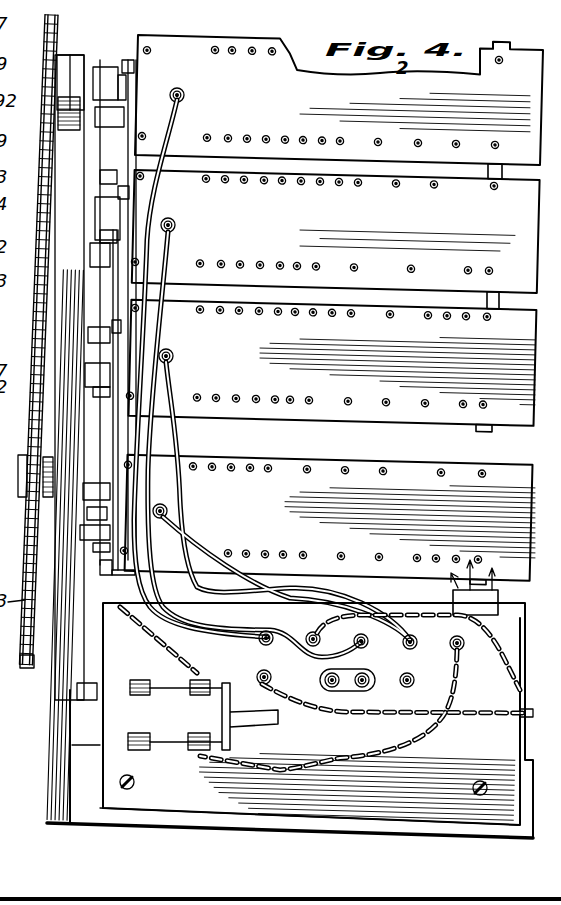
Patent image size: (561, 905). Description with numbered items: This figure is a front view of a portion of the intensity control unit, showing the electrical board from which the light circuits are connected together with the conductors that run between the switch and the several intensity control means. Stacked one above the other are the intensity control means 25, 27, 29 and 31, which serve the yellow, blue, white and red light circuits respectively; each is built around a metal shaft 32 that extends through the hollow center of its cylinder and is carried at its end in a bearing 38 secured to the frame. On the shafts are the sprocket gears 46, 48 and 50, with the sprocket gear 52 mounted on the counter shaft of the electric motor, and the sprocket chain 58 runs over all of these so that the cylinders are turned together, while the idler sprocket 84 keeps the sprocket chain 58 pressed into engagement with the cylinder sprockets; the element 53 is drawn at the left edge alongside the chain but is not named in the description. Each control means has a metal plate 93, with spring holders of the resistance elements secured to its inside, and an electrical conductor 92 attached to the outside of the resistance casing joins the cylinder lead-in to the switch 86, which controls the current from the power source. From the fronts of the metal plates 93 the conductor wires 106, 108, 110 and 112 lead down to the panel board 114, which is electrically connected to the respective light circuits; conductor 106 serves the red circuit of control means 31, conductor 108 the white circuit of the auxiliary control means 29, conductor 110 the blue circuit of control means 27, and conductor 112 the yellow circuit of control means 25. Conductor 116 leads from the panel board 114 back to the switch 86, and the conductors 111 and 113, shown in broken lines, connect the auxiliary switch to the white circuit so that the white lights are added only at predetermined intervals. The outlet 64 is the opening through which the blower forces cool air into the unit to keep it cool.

The intensity control means 25 is at (342, 518).
The intensity control means 27 is at (345, 363).
The intensity control means 29 is at (346, 231).
The intensity control means 31 is at (348, 99).
The metal shaft 32 is at (88, 80).
The bearing 38 is at (120, 82).
The sprocket gear 46 is at (103, 333).
The sprocket gear 48 is at (92, 213).
The sprocket gear 50 is at (80, 60).
The sprocket gear 52 is at (40, 670).
The chain 53 is at (38, 340).
The sprocket chain 58 is at (48, 420).
The outlet 64 is at (453, 599).
The idler sprocket 84 is at (53, 452).
The switch 86 is at (173, 743).
The electrical conductor 92 is at (176, 96).
The metal plate 93 is at (543, 118).
The conductor wire 106 is at (130, 183).
The conductor wire 108 is at (171, 233).
The conductor wire 110 is at (170, 363).
The conductor 111 is at (422, 652).
The conductor wire 112 is at (200, 548).
The conductor 113 is at (477, 713).
The panel board 114 is at (290, 720).
The conductor 116 is at (367, 752).